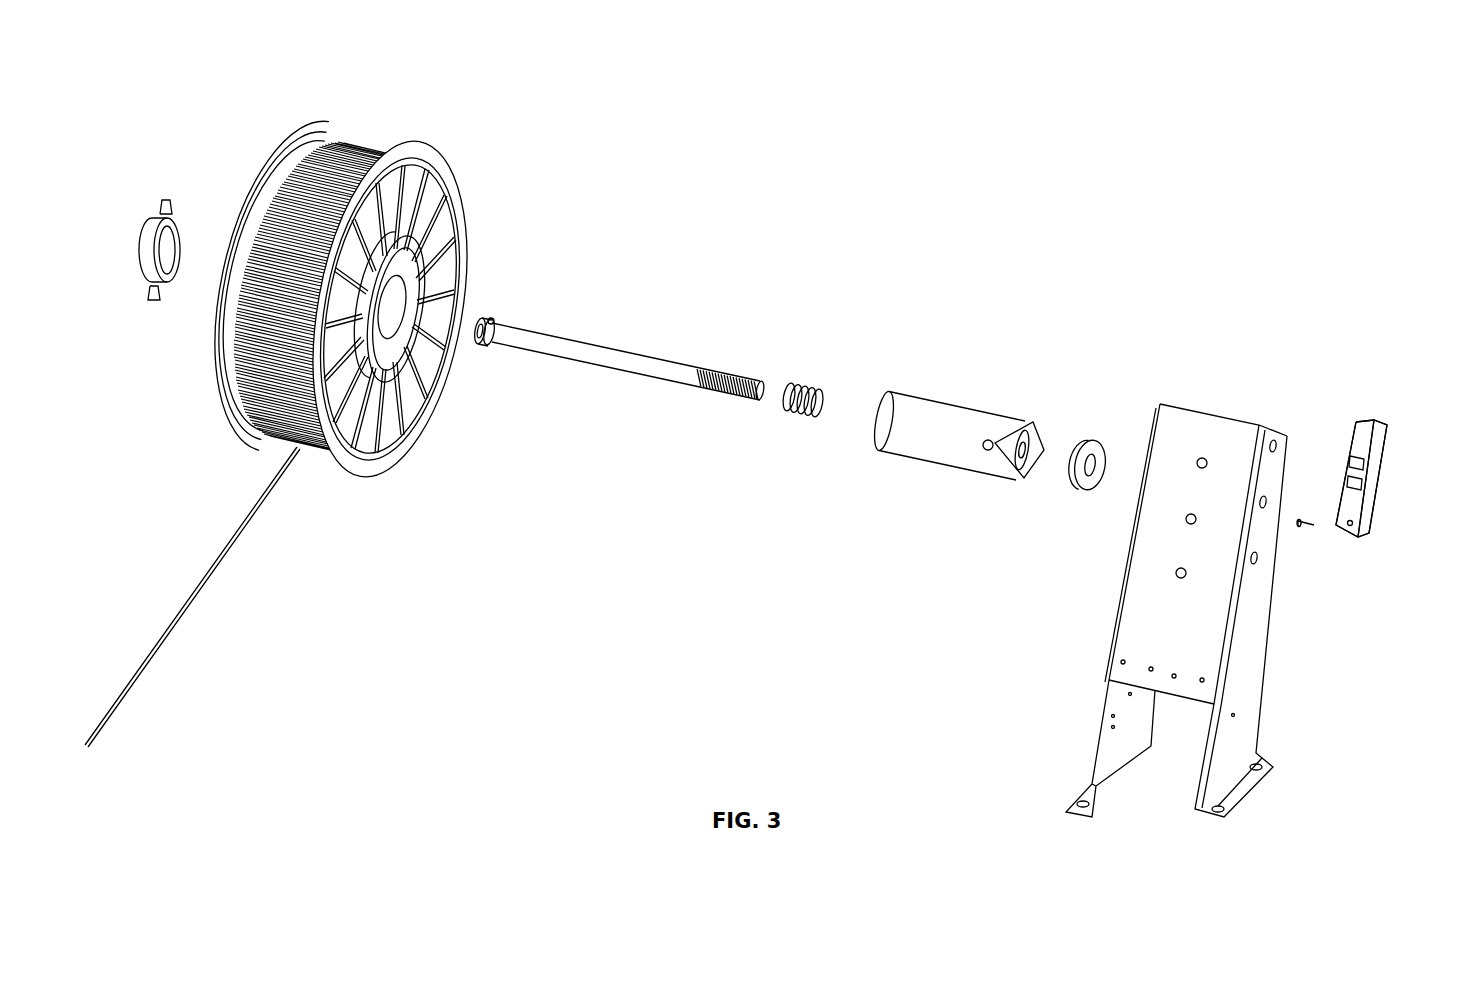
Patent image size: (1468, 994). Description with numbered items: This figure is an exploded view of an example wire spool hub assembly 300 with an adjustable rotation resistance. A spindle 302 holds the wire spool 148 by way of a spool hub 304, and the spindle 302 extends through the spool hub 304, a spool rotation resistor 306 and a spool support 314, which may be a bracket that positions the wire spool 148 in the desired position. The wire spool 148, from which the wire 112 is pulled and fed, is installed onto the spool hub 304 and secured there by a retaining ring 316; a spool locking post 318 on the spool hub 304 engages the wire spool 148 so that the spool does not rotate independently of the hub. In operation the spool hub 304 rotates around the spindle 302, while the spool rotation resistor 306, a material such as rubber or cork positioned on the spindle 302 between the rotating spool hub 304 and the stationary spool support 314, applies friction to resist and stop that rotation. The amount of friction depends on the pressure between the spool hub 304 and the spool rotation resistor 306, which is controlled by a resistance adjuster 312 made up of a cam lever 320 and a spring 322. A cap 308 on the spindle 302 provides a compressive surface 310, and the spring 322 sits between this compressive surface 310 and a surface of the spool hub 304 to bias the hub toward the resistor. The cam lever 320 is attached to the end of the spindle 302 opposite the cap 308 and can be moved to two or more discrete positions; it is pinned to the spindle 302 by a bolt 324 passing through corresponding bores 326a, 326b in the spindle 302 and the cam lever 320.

The wire spool hub assembly 300 is at (166, 76).
The wire spool 148 is at (279, 146).
The wire 112 is at (372, 146).
The retaining ring 316 is at (150, 222).
The cap 308 is at (484, 320).
The compressive surface 310 is at (495, 320).
The spindle 302 is at (600, 336).
The bore 326a is at (737, 400).
The spring 322 is at (800, 385).
The resistance adjuster 312 is at (828, 330).
The spool hub 304 is at (939, 396).
The spool locking post 318 is at (984, 450).
The spool rotation resistor 306 is at (1095, 440).
The spool support 314 is at (1196, 410).
The cam lever 320 is at (1362, 418).
The bore 326b is at (1360, 538).
The bolt 324 is at (1312, 530).